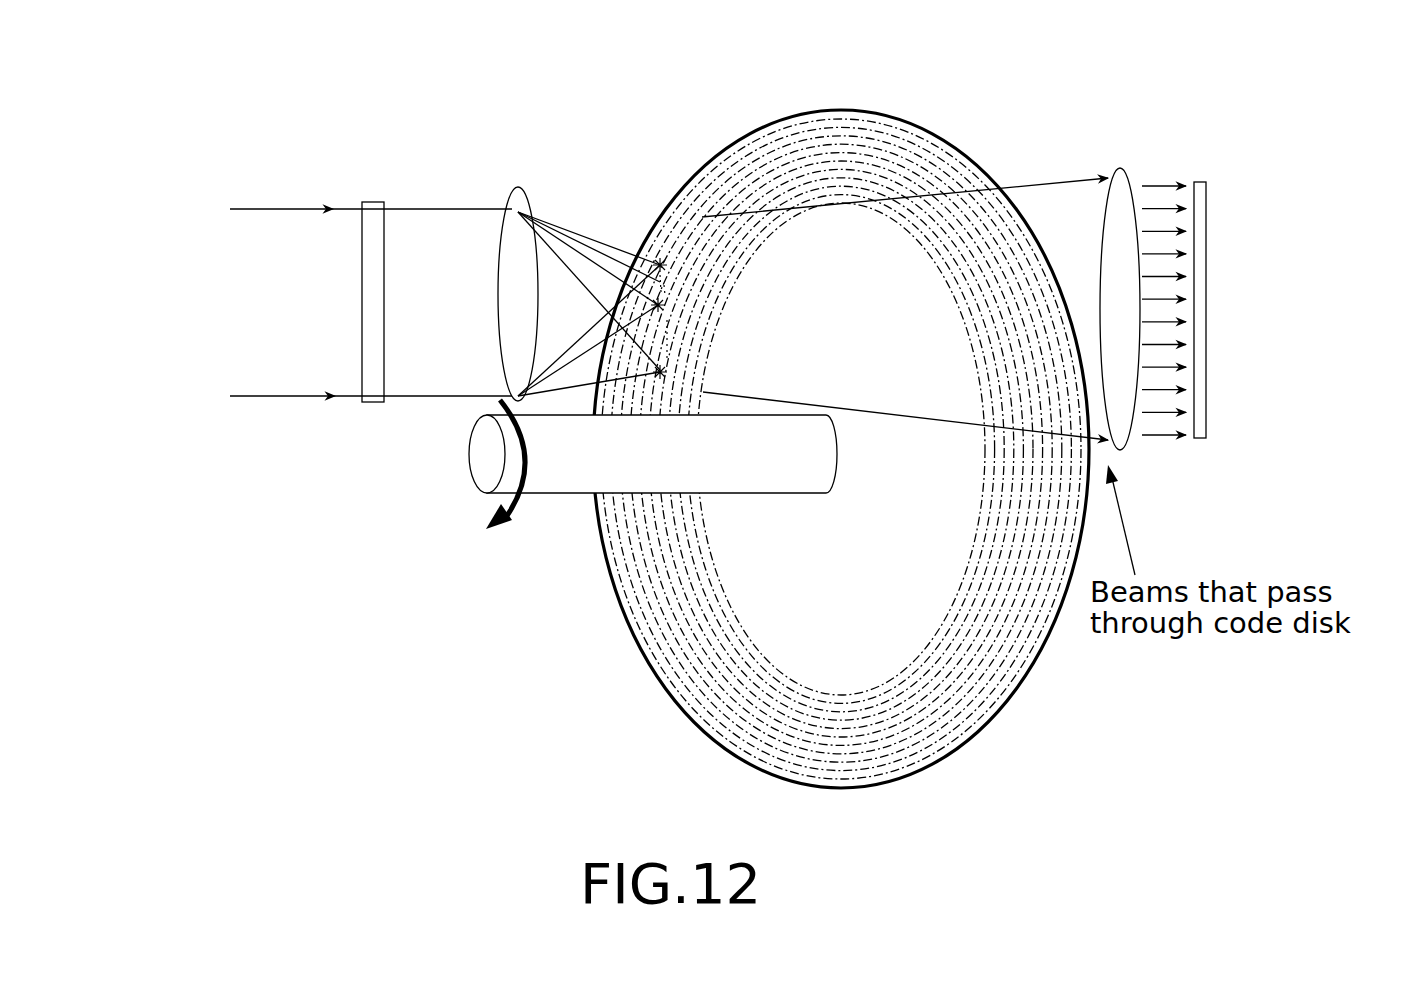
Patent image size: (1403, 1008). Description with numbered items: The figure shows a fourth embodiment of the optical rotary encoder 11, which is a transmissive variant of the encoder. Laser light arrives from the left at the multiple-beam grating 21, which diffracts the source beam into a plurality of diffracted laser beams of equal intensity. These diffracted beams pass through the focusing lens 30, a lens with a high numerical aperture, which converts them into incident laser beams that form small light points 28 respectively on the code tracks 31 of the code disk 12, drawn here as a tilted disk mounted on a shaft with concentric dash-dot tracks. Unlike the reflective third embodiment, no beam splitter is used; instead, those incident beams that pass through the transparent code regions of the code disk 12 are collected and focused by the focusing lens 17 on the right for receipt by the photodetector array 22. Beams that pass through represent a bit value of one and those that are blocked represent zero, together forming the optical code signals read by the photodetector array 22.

The optical rotary encoder 11 is at (203, 142).
The code disk 12 is at (841, 401).
The focusing lens 17 is at (1120, 168).
The multiple-beam grating 21 is at (376, 405).
The photodetector array 22 is at (1208, 195).
The light points 28 is at (700, 268).
The focusing lens 30 is at (536, 178).
The code tracks 31 is at (880, 118).